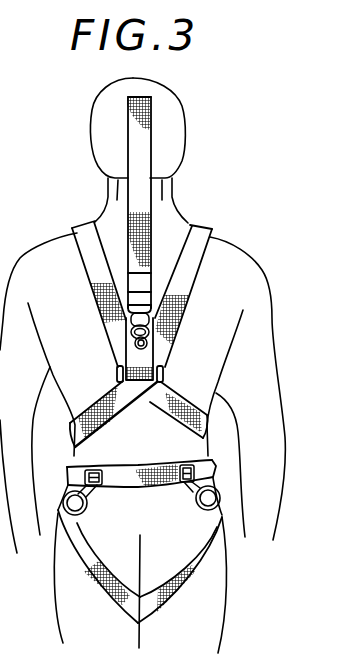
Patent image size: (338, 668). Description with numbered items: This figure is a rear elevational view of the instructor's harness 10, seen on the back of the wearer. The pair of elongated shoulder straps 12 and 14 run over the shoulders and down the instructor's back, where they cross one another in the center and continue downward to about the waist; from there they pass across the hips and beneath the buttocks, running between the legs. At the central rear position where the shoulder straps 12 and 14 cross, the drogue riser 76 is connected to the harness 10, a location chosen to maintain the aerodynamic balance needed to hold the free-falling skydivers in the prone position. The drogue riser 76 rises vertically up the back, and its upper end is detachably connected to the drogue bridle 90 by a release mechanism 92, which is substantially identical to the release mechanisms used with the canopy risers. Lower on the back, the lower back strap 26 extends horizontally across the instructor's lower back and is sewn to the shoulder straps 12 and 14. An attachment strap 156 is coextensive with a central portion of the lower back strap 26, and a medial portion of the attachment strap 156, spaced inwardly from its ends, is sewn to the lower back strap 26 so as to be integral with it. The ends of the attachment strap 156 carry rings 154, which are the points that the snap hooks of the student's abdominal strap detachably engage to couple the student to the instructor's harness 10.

The instructor's harness 10 is at (210, 206).
The shoulder strap 12 is at (193, 273).
The shoulder strap 14 is at (80, 266).
The lower back strap 26 is at (81, 468).
The drogue riser 76 is at (123, 357).
The drogue bridle 90 is at (133, 140).
The release mechanism 92 is at (160, 342).
The rings 154 is at (76, 518).
The attachment strap 156 is at (88, 490).